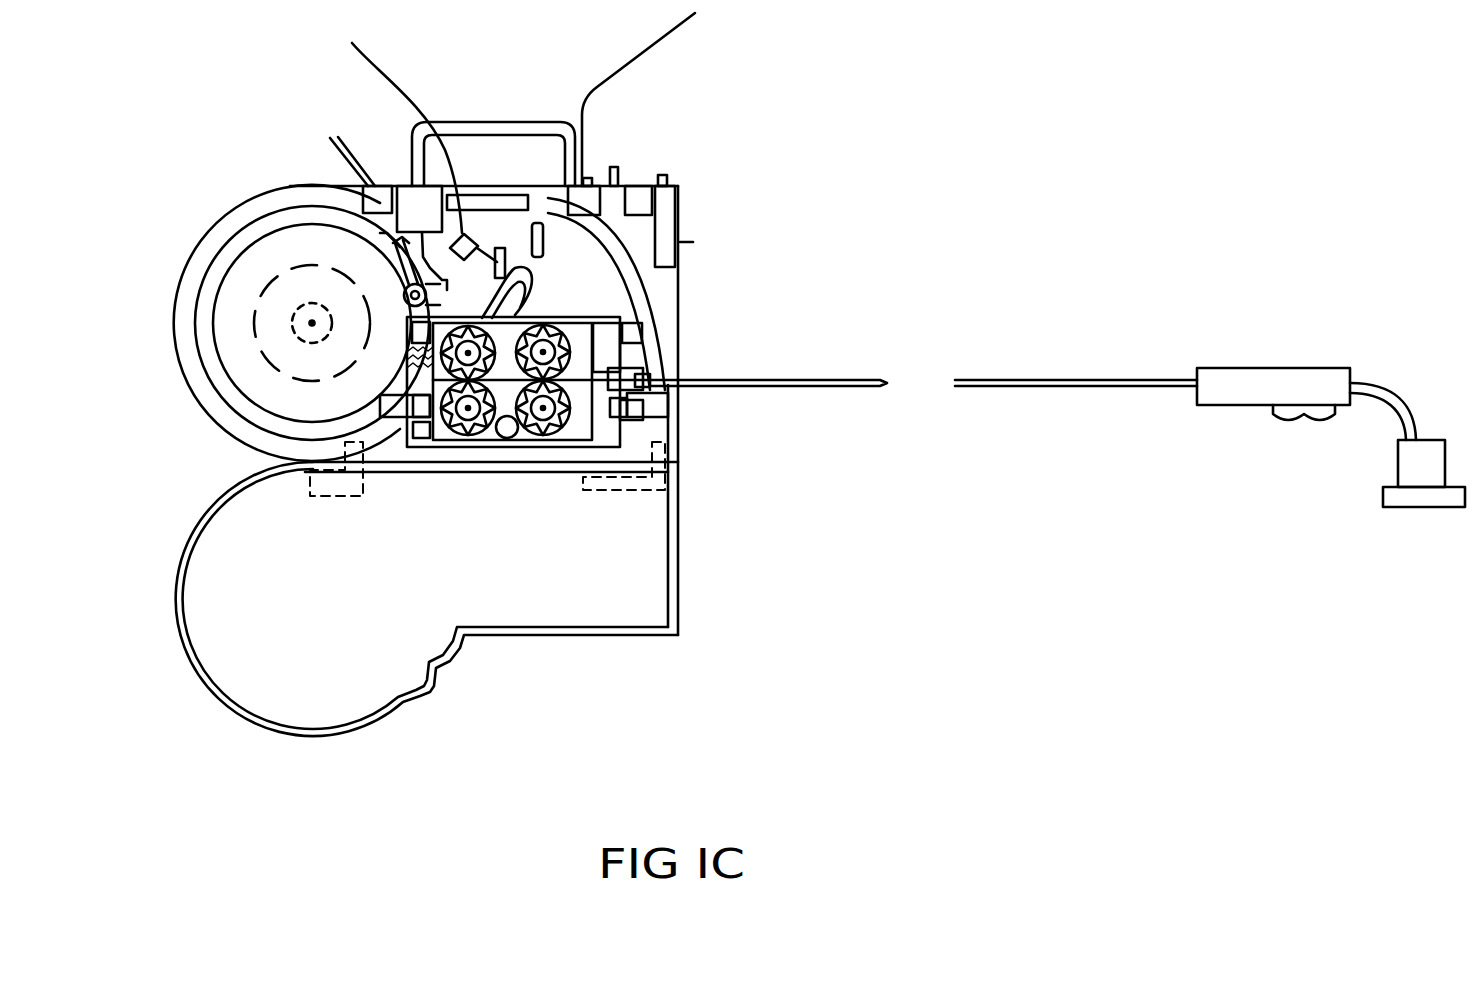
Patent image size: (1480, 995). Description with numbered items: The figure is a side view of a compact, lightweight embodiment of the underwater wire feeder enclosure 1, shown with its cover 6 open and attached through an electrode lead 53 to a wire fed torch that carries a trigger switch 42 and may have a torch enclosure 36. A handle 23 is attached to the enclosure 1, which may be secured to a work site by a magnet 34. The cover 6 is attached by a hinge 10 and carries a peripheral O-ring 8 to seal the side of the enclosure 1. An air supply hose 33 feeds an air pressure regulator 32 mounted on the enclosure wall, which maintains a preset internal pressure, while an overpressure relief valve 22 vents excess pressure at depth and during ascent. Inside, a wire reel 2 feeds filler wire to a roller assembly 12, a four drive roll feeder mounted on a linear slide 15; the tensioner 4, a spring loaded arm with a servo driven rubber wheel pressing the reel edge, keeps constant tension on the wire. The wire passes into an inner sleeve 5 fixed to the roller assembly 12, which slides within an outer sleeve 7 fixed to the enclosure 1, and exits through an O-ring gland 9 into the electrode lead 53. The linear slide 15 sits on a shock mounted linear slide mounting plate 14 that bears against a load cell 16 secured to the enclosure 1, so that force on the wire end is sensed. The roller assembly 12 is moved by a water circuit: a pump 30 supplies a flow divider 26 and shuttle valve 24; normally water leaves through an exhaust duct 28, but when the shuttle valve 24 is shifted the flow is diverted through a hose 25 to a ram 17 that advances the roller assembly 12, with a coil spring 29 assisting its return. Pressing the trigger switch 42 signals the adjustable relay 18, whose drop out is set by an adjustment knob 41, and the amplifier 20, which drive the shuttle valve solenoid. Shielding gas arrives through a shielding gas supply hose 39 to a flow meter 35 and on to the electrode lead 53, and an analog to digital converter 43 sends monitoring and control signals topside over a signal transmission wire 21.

The enclosure 1 is at (198, 245).
The wire reel 2 is at (200, 331).
The tensioner 4 is at (432, 290).
The inner sleeve 5 is at (677, 458).
The cover 6 is at (655, 552).
The outer sleeve 7 is at (655, 380).
The O-ring 8 is at (678, 598).
The O-ring gland 9 is at (688, 373).
The hinge 10 is at (655, 450).
The roller assembly 12 is at (442, 433).
The linear slide mounting plate 14 is at (660, 360).
The linear slide 15 is at (612, 330).
The load cell 16 is at (650, 330).
The ram 17 is at (653, 407).
The adjustable relay 18 is at (668, 233).
The amplifier 20 is at (637, 192).
The signal transmission wire 21 is at (360, 60).
The overpressure relief valve 22 is at (613, 167).
The handle 23 is at (557, 125).
The shuttle valve 24 is at (537, 222).
The hose 25 is at (630, 247).
The flow divider 26 is at (468, 234).
The exhaust duct 28 is at (683, 262).
The coil spring 29 is at (410, 330).
The pump 30 is at (420, 197).
The air pressure regulator 32 is at (377, 187).
The air supply hose 33 is at (330, 147).
The magnet 34 is at (322, 490).
The flow meter 35 is at (587, 180).
The torch enclosure 36 is at (1418, 455).
The shielding gas supply hose 39 is at (660, 99).
The adjustment knob 41 is at (672, 168).
The trigger switch 42 is at (1275, 410).
The analog to digital converter 43 is at (464, 235).
The electrode lead 53 is at (867, 378).